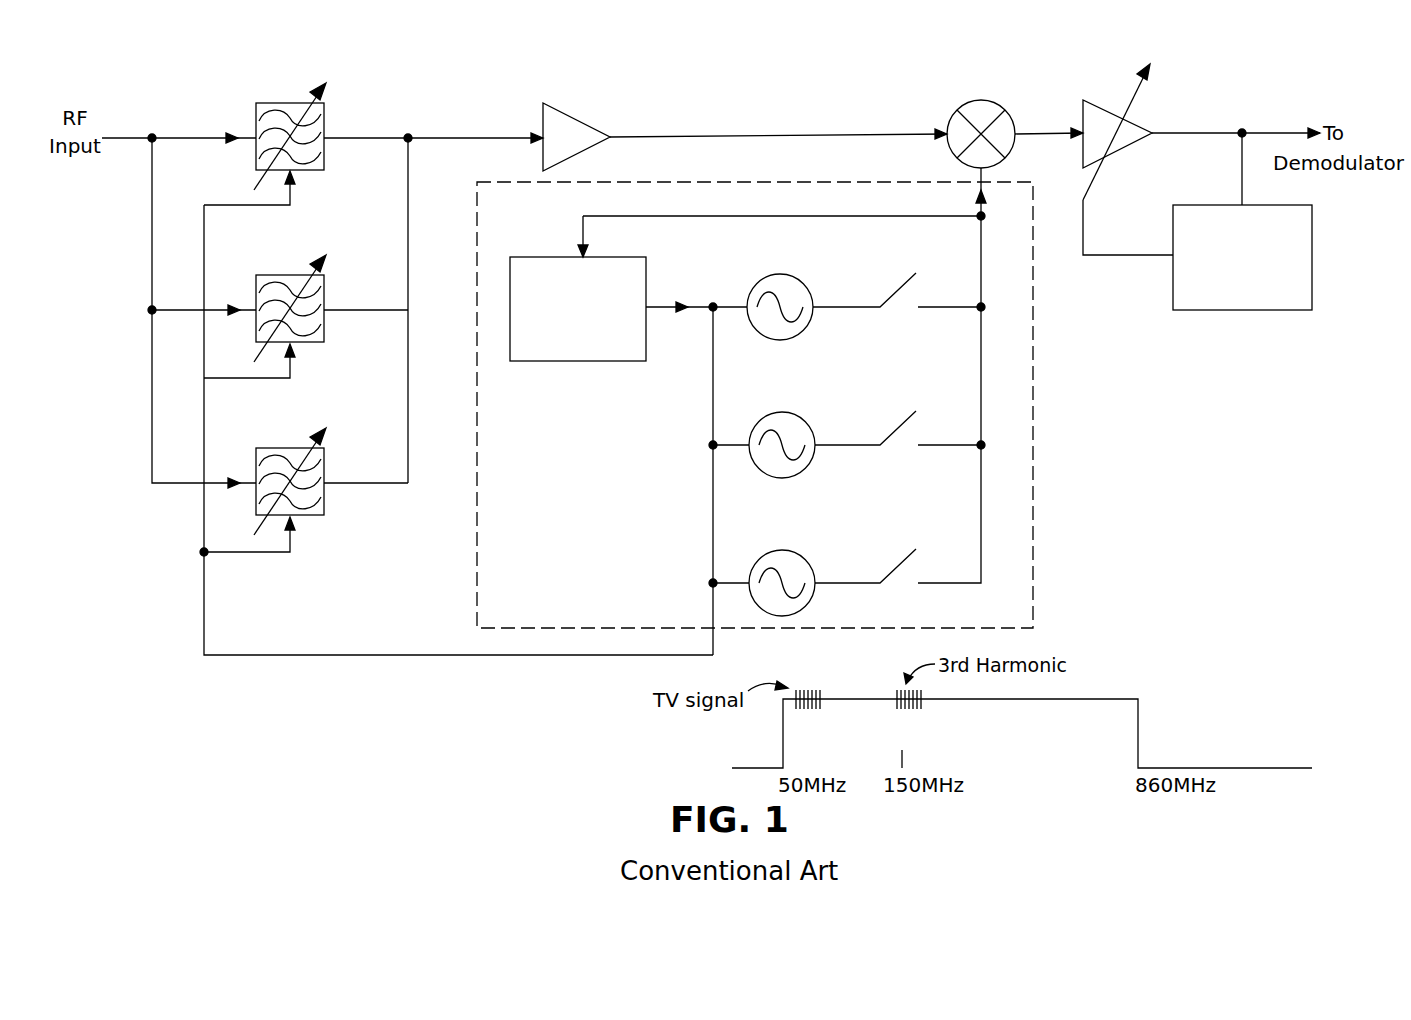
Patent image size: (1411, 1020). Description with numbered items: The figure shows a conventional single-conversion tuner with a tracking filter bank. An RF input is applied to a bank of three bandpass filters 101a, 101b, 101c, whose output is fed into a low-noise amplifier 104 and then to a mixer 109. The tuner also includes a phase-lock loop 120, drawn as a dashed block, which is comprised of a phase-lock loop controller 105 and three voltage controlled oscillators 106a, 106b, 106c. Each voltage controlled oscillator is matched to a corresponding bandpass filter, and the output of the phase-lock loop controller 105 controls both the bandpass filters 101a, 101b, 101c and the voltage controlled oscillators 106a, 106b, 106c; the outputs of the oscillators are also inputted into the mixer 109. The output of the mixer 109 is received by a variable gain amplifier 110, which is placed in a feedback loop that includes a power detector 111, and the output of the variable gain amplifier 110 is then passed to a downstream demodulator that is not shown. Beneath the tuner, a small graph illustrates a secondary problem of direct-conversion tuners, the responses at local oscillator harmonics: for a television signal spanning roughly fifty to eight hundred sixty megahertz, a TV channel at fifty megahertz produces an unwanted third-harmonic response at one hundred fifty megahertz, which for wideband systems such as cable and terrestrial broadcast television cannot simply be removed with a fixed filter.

The bandpass filter 101a is at (326, 117).
The bandpass filter 101b is at (326, 289).
The bandpass filter 101c is at (327, 462).
The low-noise amplifier 104 is at (585, 118).
The phase-lock loop controller 105 is at (648, 275).
The voltage controlled oscillator 106a is at (800, 282).
The voltage controlled oscillator 106b is at (810, 424).
The voltage controlled oscillator 106c is at (808, 557).
The mixer 109 is at (1000, 107).
The variable gain amplifier 110 is at (1140, 120).
The power detector 111 is at (1170, 297).
The phase-lock loop 120 is at (1034, 318).